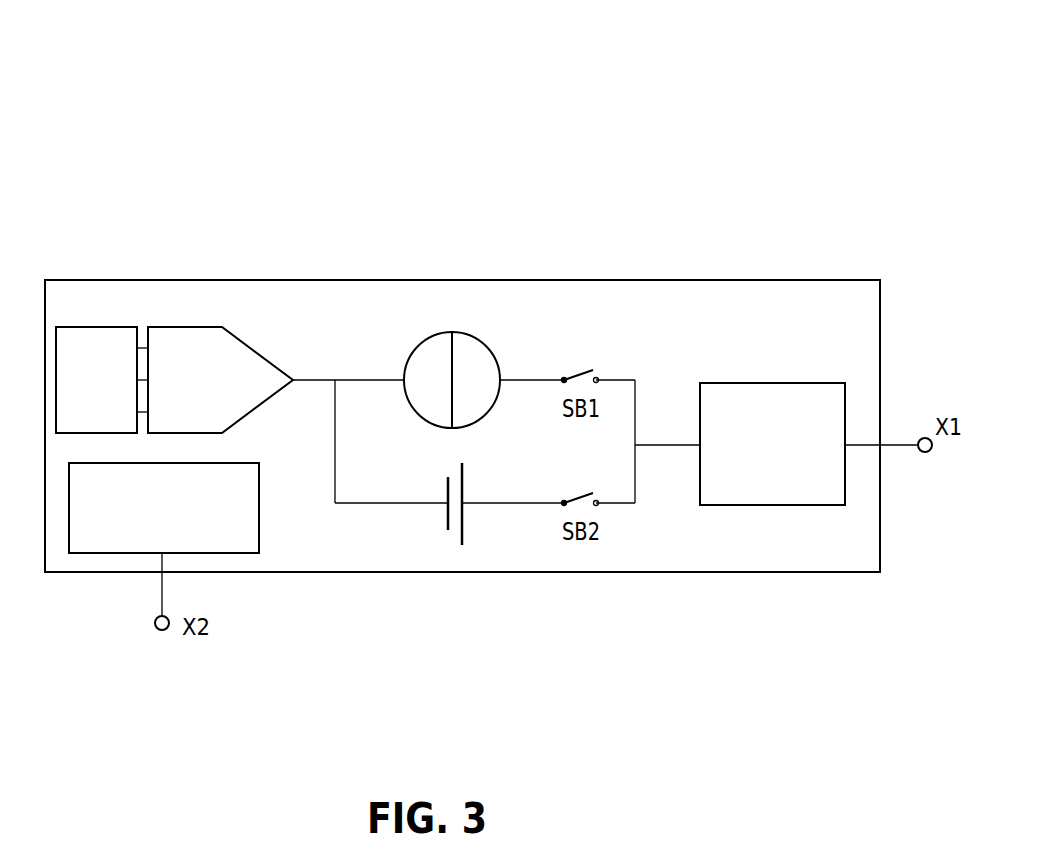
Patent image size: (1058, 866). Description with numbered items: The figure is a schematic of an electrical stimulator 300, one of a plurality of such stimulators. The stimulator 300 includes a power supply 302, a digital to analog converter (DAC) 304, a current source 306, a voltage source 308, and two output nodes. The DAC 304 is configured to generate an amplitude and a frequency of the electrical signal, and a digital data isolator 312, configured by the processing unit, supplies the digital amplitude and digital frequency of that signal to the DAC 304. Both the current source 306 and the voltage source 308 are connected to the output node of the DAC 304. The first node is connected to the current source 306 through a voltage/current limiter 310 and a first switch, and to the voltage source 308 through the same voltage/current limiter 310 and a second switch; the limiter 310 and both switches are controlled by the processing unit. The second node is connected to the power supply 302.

The electrical stimulator 300 is at (690, 49).
The power supply 302 is at (259, 505).
The digital to analog converter (DAC) 304 is at (253, 349).
The current source 306 is at (477, 343).
The voltage source 308 is at (462, 464).
The voltage/current limiter 310 is at (785, 385).
The digital data isolator 312 is at (98, 326).